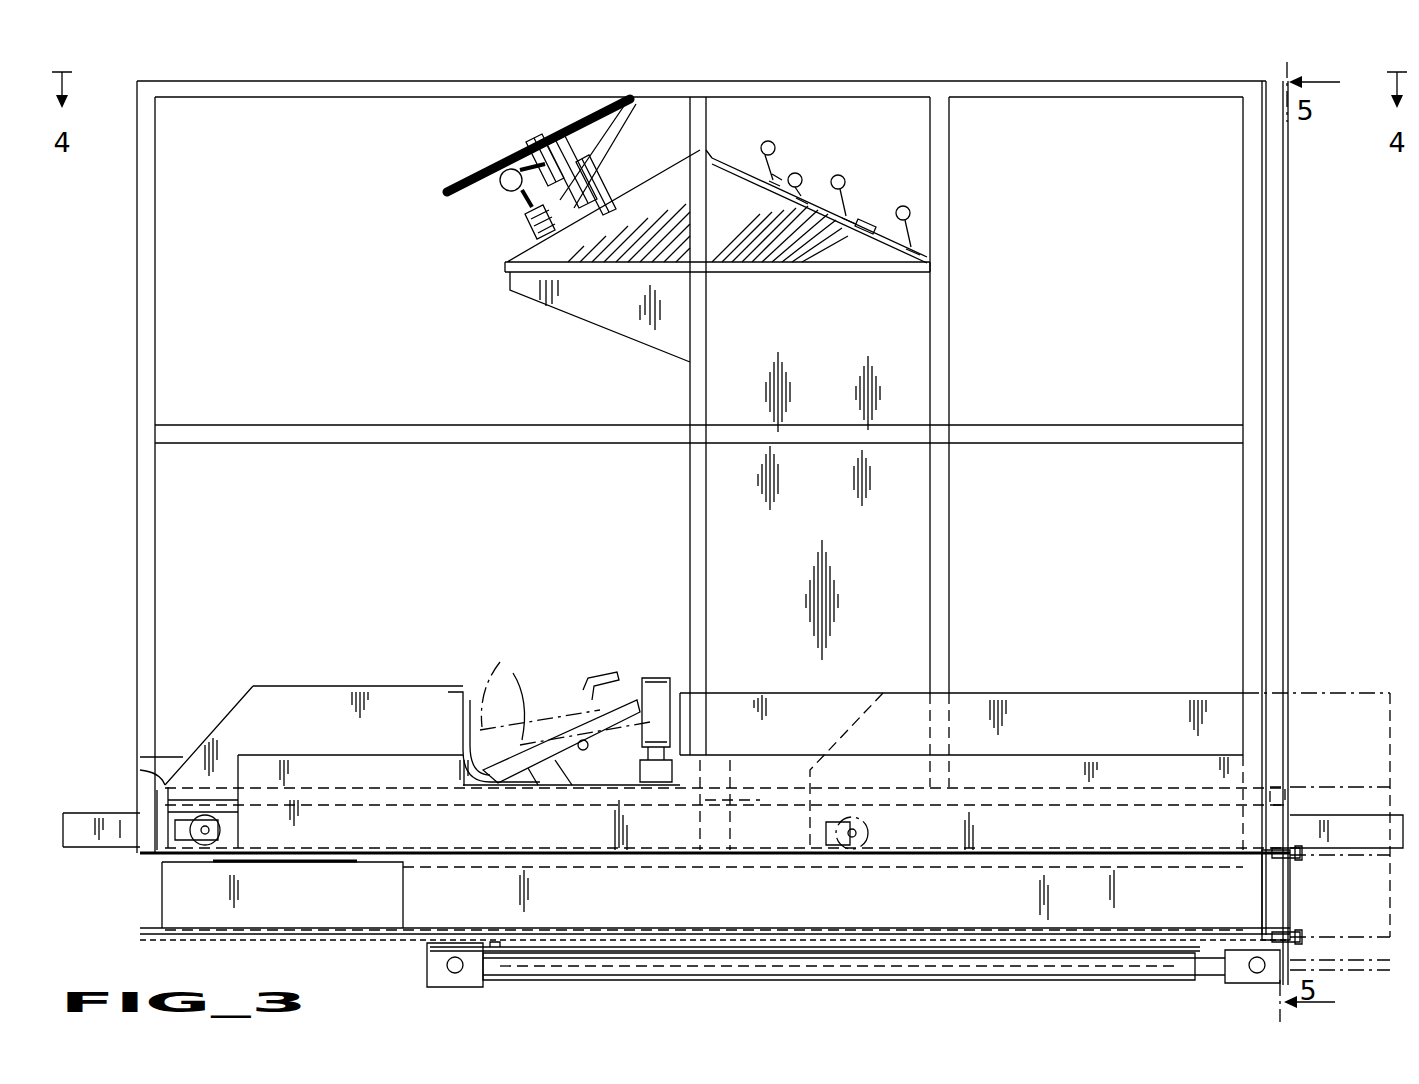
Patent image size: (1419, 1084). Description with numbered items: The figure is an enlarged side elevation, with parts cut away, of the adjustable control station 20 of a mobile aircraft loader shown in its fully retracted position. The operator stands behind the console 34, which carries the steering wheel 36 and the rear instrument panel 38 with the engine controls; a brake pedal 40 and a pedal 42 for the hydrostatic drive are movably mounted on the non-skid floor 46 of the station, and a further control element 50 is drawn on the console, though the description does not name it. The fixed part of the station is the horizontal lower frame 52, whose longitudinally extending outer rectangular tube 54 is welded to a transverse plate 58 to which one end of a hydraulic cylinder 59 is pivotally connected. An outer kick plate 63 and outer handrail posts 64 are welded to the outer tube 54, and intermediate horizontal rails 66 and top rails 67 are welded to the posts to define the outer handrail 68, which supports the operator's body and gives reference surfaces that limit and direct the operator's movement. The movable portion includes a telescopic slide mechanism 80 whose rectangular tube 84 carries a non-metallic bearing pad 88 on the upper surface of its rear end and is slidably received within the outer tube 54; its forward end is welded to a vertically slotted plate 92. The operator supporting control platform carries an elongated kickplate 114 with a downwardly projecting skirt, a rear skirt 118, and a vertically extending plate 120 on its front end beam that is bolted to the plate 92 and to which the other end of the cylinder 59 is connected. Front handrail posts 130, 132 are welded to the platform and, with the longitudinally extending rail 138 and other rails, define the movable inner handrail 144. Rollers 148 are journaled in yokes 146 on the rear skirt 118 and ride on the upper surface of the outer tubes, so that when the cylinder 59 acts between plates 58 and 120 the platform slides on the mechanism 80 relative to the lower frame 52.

The adjustable control station 20 is at (122, 238).
The console 34 is at (792, 330).
The steering wheel 36 is at (515, 150).
The rear instrument panel 38 is at (507, 258).
The brake pedal 40 is at (615, 690).
The pedal 42 is at (494, 713).
The non-skid floor 46 is at (248, 790).
The inclined ramp with knobs 50 is at (812, 185).
The horizontal lower frame 52 is at (146, 941).
The outer rectangular tube 54 is at (630, 911).
The transverse plate 58 is at (425, 955).
The hydraulic cylinder 59 is at (700, 984).
The outer kick plate 63 is at (990, 757).
The outer handrail post 64 is at (155, 510).
The intermediate horizontal rail 66 is at (205, 443).
The top rail 67 is at (179, 97).
The outer handrail 68 is at (296, 104).
The telescopic slide mechanism 80 is at (158, 912).
The rectangular tube 84 is at (340, 908).
The bearing pad 88 is at (316, 858).
The plate 92 is at (1283, 888).
The elongated kickplate 114 is at (1052, 692).
The skirt 118 is at (140, 768).
The vertically extending plate 120 is at (1285, 705).
The front handrail post 130 is at (940, 176).
The front handrail post 132 is at (1285, 206).
The longitudinally extending rail 138 is at (1047, 100).
The movable inner handrail 144 is at (1298, 268).
The yoke 146 is at (160, 851).
The roller 148 is at (213, 850).